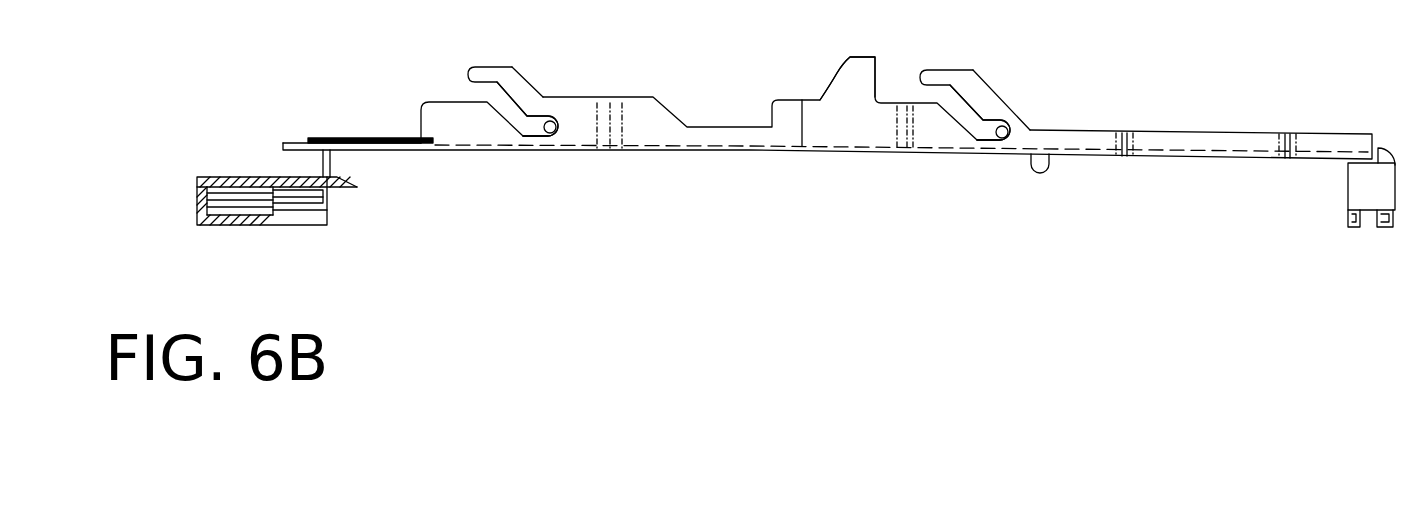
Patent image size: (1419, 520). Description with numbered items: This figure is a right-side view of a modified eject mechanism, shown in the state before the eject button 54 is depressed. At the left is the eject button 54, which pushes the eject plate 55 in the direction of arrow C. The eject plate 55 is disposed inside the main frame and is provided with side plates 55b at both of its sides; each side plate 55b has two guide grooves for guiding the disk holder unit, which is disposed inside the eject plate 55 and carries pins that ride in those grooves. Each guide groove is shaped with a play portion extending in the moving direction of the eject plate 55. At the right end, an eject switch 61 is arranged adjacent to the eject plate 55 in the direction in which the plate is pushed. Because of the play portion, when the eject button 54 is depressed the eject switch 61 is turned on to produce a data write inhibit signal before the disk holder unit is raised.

The eject button 54 is at (231, 226).
The eject plate 55 is at (692, 133).
The side plate 55b is at (837, 128).
The eject switch 61 is at (1347, 188).